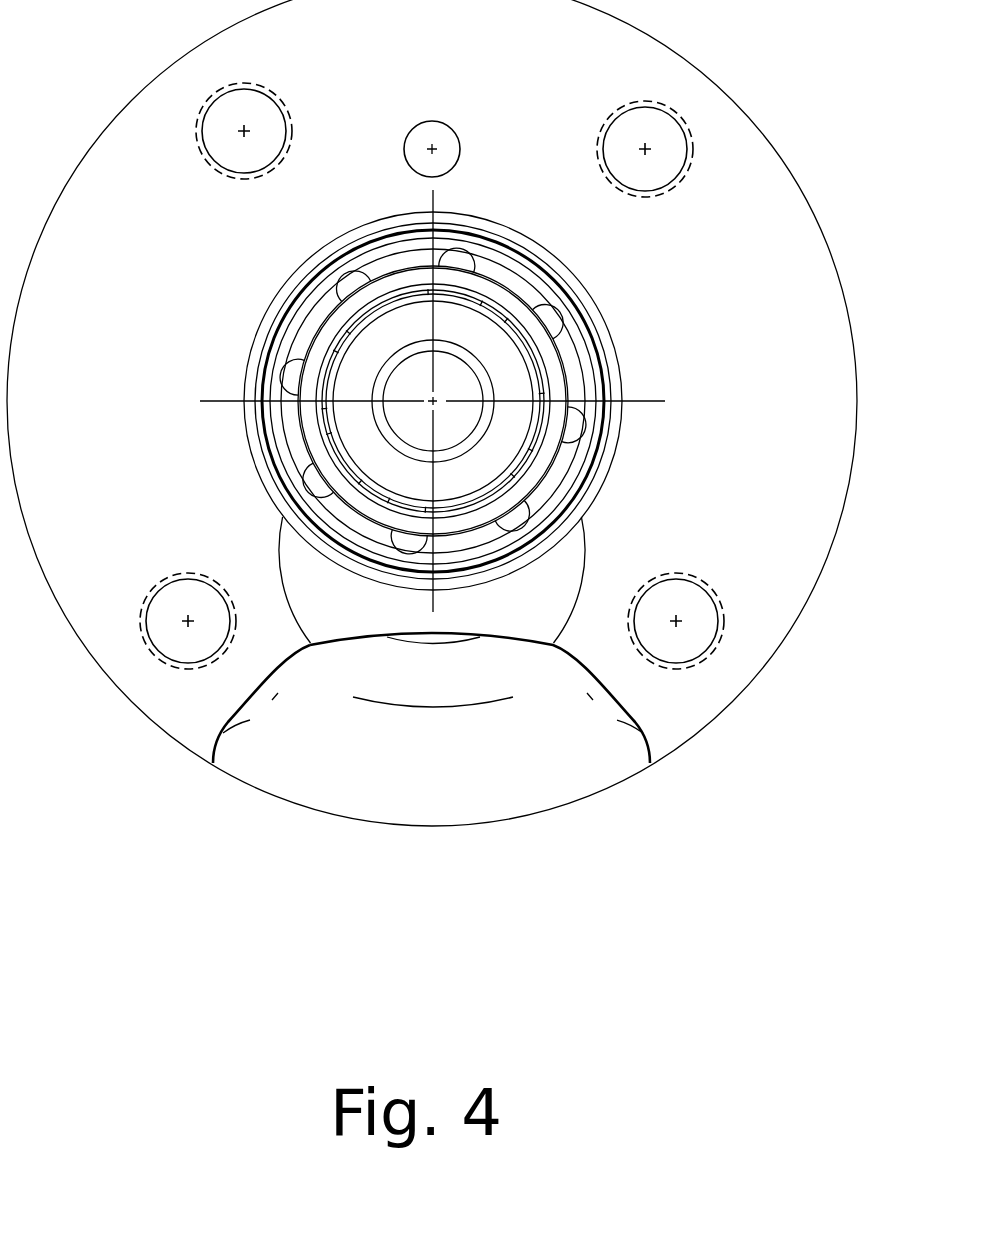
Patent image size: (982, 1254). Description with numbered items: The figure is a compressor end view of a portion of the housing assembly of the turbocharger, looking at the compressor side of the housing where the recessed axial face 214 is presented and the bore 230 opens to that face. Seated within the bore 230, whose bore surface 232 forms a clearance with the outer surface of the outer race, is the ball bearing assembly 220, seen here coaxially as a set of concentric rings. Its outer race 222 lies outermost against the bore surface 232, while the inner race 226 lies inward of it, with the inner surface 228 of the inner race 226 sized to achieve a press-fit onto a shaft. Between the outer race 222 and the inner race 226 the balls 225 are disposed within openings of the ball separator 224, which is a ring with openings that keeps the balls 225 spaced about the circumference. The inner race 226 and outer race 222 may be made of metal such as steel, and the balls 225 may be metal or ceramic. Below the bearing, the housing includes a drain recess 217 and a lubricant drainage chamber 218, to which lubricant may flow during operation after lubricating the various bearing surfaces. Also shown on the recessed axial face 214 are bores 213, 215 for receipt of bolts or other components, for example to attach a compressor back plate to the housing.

The mounting hole 213 is at (412, 127).
The recessed axial face 214 is at (457, 26).
The bolt holes 215 is at (210, 112).
The drain recess 217 is at (320, 588).
The lubricant drainage chamber 218 is at (457, 685).
The ball bearing assembly 220 is at (402, 386).
The outer race 222 is at (287, 338).
The ball separator 224 is at (309, 420).
The balls 225 is at (292, 378).
The inner race 226 is at (352, 430).
The inner surface 228 is at (390, 434).
The bore 230 is at (378, 221).
The bore surface 232 is at (331, 259).